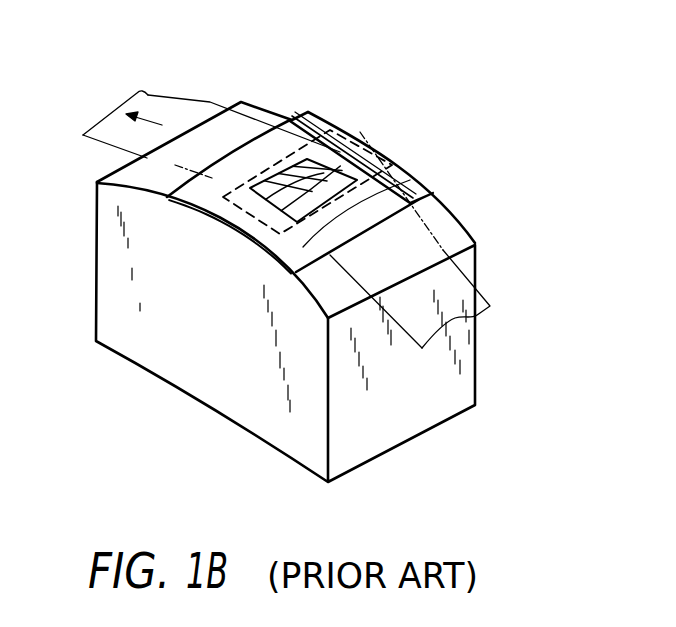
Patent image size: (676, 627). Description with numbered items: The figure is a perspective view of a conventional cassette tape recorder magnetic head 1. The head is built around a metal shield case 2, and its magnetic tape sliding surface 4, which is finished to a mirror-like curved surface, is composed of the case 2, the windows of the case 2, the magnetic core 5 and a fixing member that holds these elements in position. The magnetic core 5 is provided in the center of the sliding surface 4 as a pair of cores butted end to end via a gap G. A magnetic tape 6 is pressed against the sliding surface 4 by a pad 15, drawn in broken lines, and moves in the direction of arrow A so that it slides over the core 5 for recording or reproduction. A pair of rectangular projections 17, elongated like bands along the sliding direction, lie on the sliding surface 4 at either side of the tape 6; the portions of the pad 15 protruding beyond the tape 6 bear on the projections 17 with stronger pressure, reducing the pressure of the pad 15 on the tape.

The magnetic head 1 is at (186, 404).
The case 2 is at (466, 343).
The magnetic tape sliding surface 4 is at (458, 224).
The magnetic core 5 is at (308, 173).
The magnetic tape 6 is at (194, 104).
The pad 15 is at (362, 128).
The rectangular projections 17 is at (398, 208).
The gap G is at (312, 172).